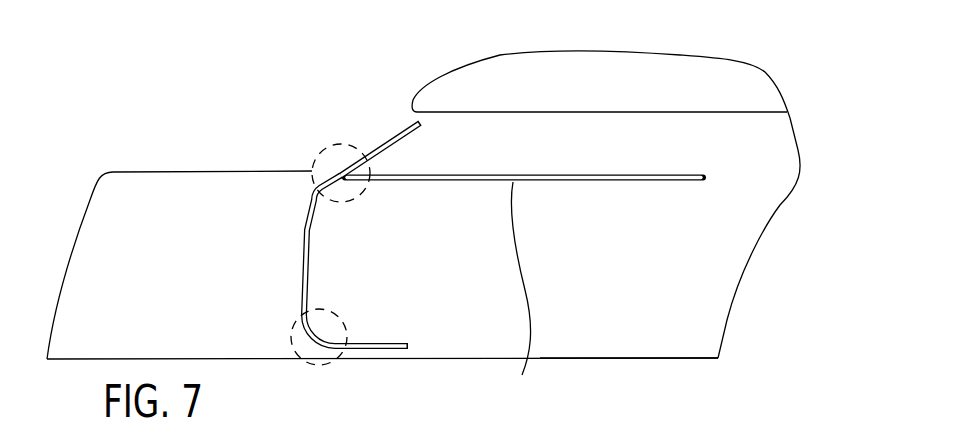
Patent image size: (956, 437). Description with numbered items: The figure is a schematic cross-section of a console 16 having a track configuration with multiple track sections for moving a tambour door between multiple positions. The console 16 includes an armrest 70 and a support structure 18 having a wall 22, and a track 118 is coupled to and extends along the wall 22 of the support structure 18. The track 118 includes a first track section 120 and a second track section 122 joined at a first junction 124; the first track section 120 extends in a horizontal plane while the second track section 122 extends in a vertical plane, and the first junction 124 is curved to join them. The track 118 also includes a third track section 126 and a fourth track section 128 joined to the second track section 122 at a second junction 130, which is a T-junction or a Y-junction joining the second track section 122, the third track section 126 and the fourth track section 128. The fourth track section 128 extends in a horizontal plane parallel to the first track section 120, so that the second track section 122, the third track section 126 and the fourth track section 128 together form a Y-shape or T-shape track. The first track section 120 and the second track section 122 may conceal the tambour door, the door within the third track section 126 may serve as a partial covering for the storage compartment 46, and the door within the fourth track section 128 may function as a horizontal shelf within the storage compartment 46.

The console 16 is at (66, 109).
The support structure 18 is at (793, 118).
The wall 22 is at (705, 352).
The storage compartment 46 is at (610, 337).
The armrest 70 is at (628, 58).
The track 118 is at (242, 114).
The first track section 120 is at (370, 347).
The second track section 122 is at (300, 250).
The first junction 124 is at (290, 333).
The third track section 126 is at (383, 142).
The fourth track section 128 is at (518, 295).
The second junction 130 is at (342, 145).